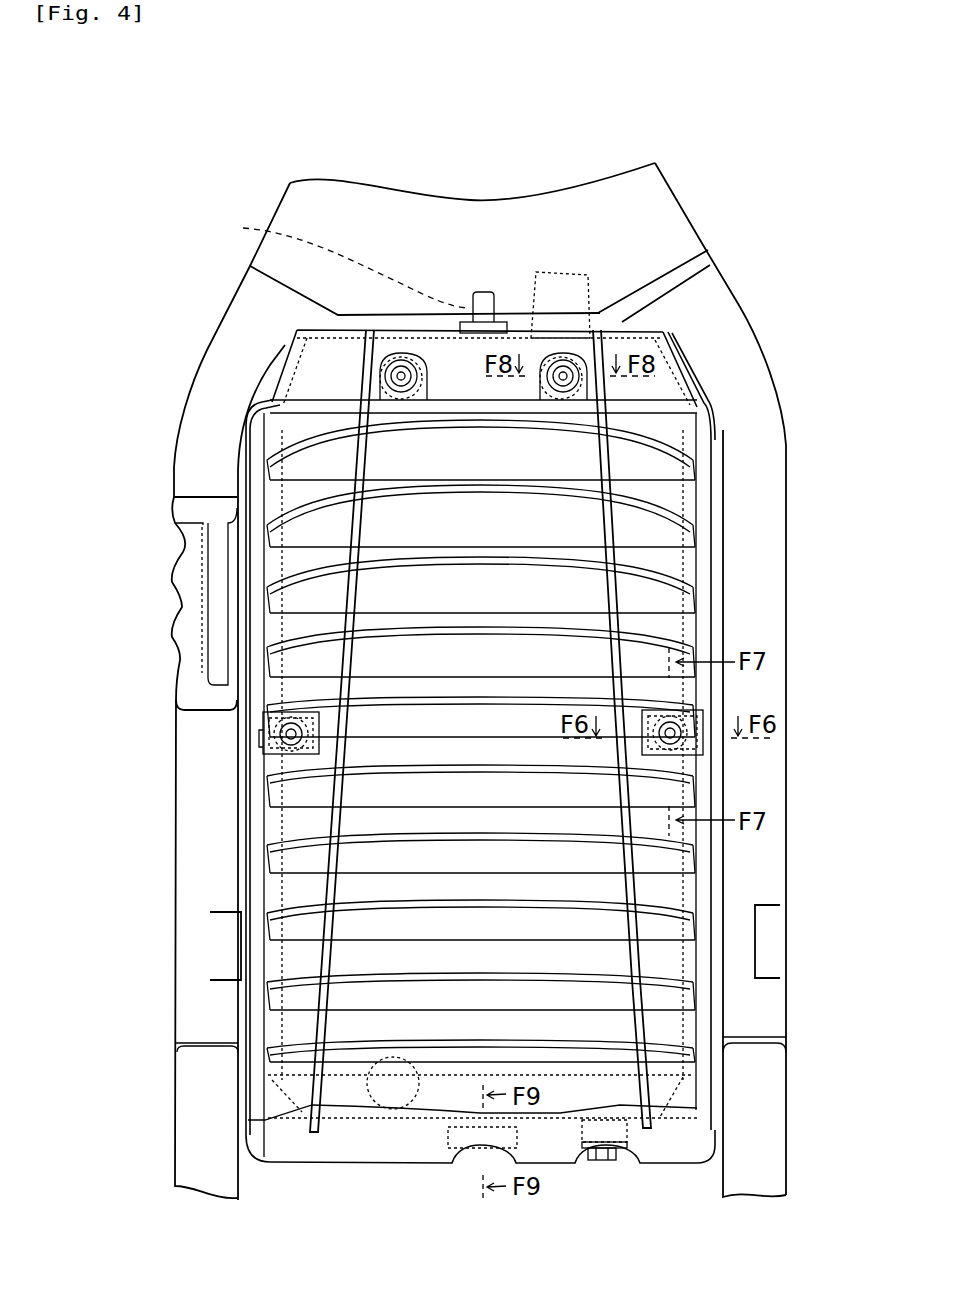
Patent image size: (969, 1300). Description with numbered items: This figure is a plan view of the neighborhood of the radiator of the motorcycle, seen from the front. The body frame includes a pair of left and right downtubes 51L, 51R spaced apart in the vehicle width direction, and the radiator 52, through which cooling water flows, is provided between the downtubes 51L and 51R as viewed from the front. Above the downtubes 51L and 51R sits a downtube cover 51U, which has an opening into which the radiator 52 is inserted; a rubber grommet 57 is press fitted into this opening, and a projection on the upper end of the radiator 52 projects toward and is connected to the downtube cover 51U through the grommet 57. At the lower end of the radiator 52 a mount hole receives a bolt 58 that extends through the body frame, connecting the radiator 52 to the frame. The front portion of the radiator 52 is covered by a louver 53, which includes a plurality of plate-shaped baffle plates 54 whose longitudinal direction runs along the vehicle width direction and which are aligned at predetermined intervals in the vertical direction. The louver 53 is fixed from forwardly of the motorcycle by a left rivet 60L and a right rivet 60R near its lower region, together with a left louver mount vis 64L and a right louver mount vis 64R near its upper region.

The downtube cover 51U is at (665, 212).
The downtube 51L is at (733, 340).
The downtube 51R is at (185, 475).
The radiator 52 is at (682, 503).
The louver 53 is at (707, 423).
The baffle plates 54 is at (677, 468).
The rubber grommet 57 is at (341, 260).
The bolt 58 is at (604, 1162).
The rivet 60L is at (690, 712).
The rivet 60R is at (270, 736).
The louver mount vis 64L is at (563, 373).
The louver mount vis 64R is at (388, 381).